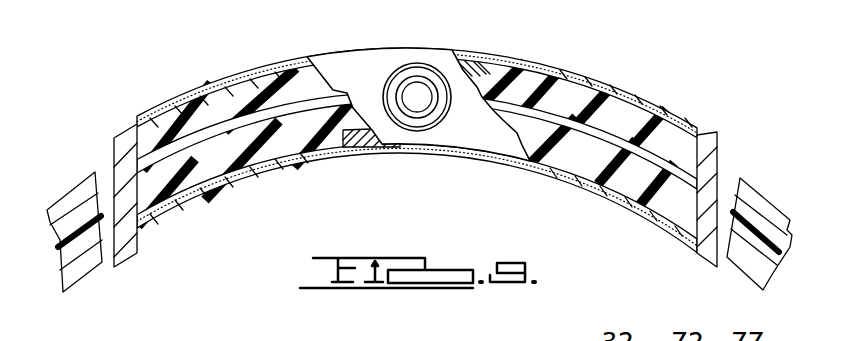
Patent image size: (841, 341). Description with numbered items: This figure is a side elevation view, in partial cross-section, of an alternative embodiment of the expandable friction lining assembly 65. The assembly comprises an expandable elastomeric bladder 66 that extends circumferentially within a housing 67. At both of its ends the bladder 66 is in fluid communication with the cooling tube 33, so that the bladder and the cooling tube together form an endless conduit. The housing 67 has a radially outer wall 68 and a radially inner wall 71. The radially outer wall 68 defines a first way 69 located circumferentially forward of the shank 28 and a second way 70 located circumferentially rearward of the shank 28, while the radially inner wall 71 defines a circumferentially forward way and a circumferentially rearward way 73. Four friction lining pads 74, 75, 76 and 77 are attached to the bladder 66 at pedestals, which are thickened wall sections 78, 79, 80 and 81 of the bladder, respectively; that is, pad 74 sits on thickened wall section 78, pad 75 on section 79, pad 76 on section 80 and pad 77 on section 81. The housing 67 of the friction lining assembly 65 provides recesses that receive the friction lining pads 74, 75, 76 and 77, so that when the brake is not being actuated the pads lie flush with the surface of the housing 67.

The friction lining assembly 65 is at (135, 82).
The radially outer wall 68 is at (375, 45).
The shank 28 is at (410, 123).
The first way 69 is at (140, 153).
The second way 70 is at (700, 160).
The friction lining pad 74 is at (247, 72).
The friction lining pad 75 is at (603, 83).
The thickened wall section 78 is at (182, 107).
The thickened wall section 79 is at (500, 72).
The expandable elastomeric bladder 66 is at (230, 160).
The friction lining pad 76 is at (293, 160).
The thickened wall section 81 is at (550, 167).
The friction lining pad 77 is at (150, 200).
The thickened wall section 80 is at (343, 147).
The housing 67 is at (453, 140).
The radially inner wall 71 is at (490, 153).
The circumferentially rearward way 73 is at (693, 213).
The cooling tube 33 is at (80, 280).